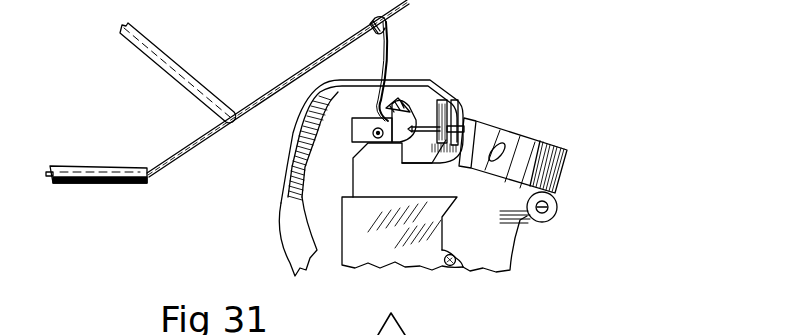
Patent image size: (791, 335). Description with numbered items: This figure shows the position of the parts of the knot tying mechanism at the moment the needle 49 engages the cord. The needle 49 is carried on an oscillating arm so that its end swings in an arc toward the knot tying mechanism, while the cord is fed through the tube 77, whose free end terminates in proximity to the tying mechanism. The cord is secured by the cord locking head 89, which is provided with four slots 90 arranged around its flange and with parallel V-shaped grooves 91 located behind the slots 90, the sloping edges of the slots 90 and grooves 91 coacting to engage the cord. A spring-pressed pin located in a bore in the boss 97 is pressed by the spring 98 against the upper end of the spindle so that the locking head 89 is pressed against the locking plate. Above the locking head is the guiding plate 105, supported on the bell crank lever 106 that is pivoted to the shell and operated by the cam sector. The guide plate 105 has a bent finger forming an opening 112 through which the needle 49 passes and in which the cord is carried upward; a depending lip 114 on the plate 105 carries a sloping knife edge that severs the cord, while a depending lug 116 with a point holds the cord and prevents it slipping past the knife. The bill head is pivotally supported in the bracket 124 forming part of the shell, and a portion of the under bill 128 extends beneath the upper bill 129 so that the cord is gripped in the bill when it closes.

The needle 49 is at (162, 66).
The tube 77 is at (95, 170).
The guiding plate 105 is at (418, 85).
The opening 112 is at (343, 90).
The bell crank lever 106 is at (280, 223).
The under bill 128 is at (388, 128).
The upper bill 129 is at (395, 112).
The depending lug 116 is at (452, 122).
The depending lip 114 is at (463, 117).
The bracket 124 is at (378, 165).
The boss 97 is at (517, 197).
The spring 98 is at (542, 212).
The cord locking head 89 is at (525, 133).
The slots 90 is at (502, 147).
The grooves 91 is at (542, 148).